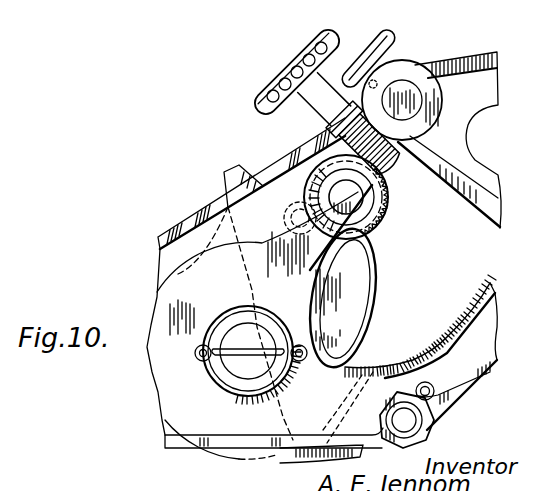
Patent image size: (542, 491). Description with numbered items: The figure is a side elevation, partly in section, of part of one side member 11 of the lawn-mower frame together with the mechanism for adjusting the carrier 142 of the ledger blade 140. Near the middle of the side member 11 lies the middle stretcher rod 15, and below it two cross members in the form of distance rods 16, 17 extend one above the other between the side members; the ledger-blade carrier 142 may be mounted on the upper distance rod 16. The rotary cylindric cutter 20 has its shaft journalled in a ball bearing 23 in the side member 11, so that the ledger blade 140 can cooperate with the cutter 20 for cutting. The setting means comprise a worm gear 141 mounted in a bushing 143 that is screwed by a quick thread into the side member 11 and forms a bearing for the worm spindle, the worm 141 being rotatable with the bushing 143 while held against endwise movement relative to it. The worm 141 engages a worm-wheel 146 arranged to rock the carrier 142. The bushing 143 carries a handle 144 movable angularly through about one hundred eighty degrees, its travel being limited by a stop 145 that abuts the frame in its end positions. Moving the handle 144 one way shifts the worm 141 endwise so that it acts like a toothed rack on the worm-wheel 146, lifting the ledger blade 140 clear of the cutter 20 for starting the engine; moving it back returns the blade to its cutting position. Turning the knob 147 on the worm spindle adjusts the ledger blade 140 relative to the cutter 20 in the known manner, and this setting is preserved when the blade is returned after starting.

The side member 11 is at (447, 370).
The middle stretcher rod 15 is at (432, 66).
The distance rod 16 is at (352, 206).
The distance rod 17 is at (402, 420).
The rotary cylindric cutter 20 is at (178, 274).
The ball bearing 23 is at (247, 362).
The ledger blade 140 is at (298, 456).
The worm gear 141 is at (392, 173).
The carrier 142 is at (238, 189).
The bushing 143 is at (322, 132).
The handle 144 is at (376, 33).
The stop 145 is at (408, 91).
The worm-wheel 146 is at (384, 212).
The knob 147 is at (314, 40).